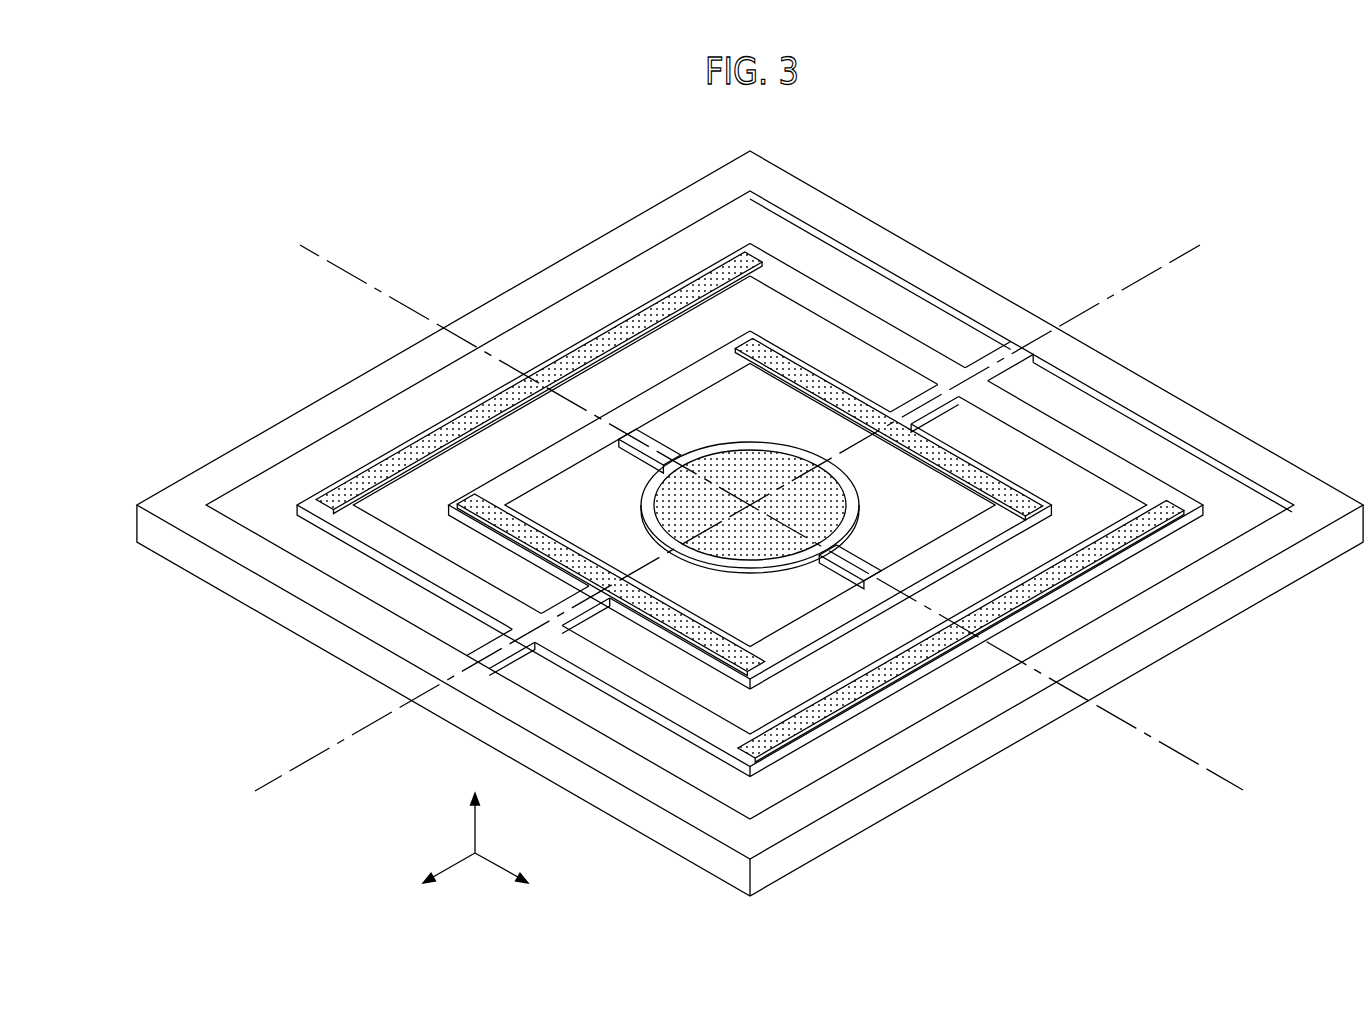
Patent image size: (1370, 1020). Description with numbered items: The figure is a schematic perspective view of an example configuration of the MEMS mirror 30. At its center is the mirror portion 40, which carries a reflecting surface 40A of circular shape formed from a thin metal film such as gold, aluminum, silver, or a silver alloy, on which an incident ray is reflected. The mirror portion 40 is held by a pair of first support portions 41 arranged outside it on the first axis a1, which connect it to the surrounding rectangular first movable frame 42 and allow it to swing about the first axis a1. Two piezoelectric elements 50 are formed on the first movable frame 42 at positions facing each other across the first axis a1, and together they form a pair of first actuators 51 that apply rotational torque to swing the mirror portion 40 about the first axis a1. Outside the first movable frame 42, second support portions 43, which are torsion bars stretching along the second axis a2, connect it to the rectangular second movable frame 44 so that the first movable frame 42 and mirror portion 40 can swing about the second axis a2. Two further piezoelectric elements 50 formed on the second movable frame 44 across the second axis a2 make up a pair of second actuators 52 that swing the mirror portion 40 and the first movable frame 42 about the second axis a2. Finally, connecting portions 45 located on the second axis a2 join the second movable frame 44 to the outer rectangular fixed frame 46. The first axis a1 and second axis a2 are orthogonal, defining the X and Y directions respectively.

The MEMS mirror 30 is at (466, 205).
The mirror portion 40 is at (750, 454).
The reflecting surface 40A is at (752, 466).
The first support portion 41 is at (647, 458).
The first movable frame 42 is at (935, 552).
The second support portion 43 is at (918, 400).
The second movable frame 44 is at (850, 307).
The connecting portion 45 is at (991, 355).
The fixed frame 46 is at (837, 212).
The piezoelectric element 50 is at (486, 412).
The first actuator 51 is at (1000, 460).
The second actuator 52 is at (421, 424).
The first axis a1 is at (1161, 743).
The second axis a2 is at (1120, 292).